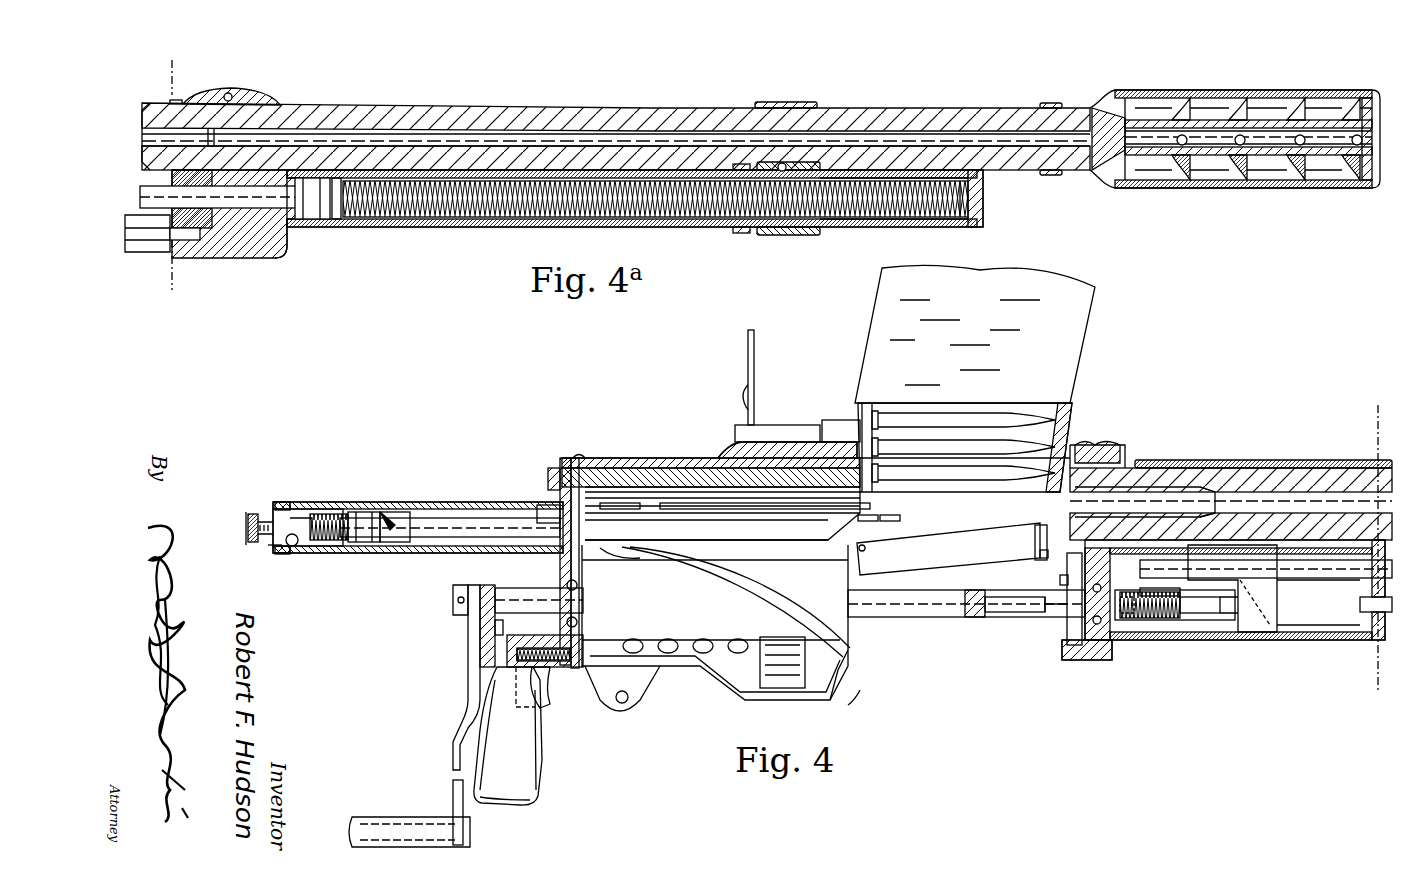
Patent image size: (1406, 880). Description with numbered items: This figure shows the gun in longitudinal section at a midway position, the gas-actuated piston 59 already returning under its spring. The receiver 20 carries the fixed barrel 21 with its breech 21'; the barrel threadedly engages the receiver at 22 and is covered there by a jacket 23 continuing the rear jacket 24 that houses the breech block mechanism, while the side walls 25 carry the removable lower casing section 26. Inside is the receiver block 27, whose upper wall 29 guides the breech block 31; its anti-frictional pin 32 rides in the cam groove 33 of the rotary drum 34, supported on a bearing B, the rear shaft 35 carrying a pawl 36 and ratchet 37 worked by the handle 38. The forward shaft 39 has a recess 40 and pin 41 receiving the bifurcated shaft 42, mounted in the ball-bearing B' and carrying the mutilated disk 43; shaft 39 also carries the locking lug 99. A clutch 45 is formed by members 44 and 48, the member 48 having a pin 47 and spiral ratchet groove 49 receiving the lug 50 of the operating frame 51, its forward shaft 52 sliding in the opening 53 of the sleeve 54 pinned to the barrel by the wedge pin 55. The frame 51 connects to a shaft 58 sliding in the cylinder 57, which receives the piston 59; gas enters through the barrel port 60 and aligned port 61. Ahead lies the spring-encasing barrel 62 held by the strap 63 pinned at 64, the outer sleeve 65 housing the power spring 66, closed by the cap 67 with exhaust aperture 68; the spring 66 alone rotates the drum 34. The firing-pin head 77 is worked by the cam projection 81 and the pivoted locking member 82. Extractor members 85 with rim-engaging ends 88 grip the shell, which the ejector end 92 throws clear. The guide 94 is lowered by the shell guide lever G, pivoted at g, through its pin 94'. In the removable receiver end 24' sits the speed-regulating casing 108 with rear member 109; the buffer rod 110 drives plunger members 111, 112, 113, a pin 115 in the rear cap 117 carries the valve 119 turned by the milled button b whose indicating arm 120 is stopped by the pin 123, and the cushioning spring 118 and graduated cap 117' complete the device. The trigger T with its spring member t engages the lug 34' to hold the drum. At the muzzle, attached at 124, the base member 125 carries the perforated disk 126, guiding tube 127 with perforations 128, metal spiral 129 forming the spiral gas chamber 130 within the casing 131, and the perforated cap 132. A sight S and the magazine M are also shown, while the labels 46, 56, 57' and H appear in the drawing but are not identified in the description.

In FIG. 4A, the receiver 20 is at (585, 107).
In FIG. 4, the receiver 20 is at (1100, 445).
In FIG. 4, the fixed barrel 21 is at (1231, 477).
In FIG. 4, the breech 21' is at (1175, 465).
In FIG. 4, the threaded engagement 22 is at (1090, 495).
In FIG. 4, the jacket 23 is at (1170, 460).
In FIG. 4, the rear jacket 24 is at (816, 456).
In FIG. 4, the removable end of receiver 24' is at (539, 487).
In FIG. 4, the side walls 25 is at (571, 568).
In FIG. 4, the lower section of casing 26 is at (845, 668).
In FIG. 4, the receiver block 27 is at (612, 478).
In FIG. 4, the upper wall 29 is at (806, 458).
In FIG. 4, the breech block 31 is at (670, 525).
In FIG. 4, the anti-frictional pin 32 is at (636, 558).
In FIG. 4, the cam groove 33 is at (742, 580).
In FIG. 4, the rotary cam drum 34 is at (715, 622).
In FIG. 4, the lug 34' is at (668, 626).
In FIG. 4, the shaft 35 is at (512, 597).
In FIG. 4, the pawl 36 is at (487, 585).
In FIG. 4, the ratchet 37 is at (498, 640).
In FIG. 4, the handle 38 is at (468, 625).
In FIG. 4, the forward shaft 39 is at (908, 617).
In FIG. 4, the recess 40 is at (985, 617).
In FIG. 4, the diametrically disposed pin 41 is at (1015, 614).
In FIG. 4, the shaft 42 is at (1046, 614).
In FIG. 4, the mutilated disk 43 is at (1068, 645).
In FIG. 4, the clutch member 44 is at (1130, 620).
In FIG. 4, the clutch 45 is at (1165, 618).
In FIG. 4, the gas piston 46 is at (1150, 592).
In FIG. 4, the pin 47 is at (1140, 620).
In FIG. 4, the clutch member 48 is at (1205, 618).
In FIG. 4, the spiral ratchet groove 49 is at (1232, 613).
In FIG. 4, the lug 50 is at (1262, 630).
In FIG. 4, the operating frame 51 is at (1212, 600).
In FIG. 4A, the forward shaft 52 is at (175, 252).
In FIG. 4, the forward shaft 52 is at (1365, 612).
In FIG. 4A, the spring-propelled locking pin 53 is at (200, 240).
In FIG. 4, the spring-propelled locking pin 53 is at (1155, 571).
In FIG. 4A, the sleeve 54 is at (238, 258).
In FIG. 4, the sleeve 54 is at (1067, 572).
In FIG. 4A, the wedge pin 55 is at (230, 96).
In FIG. 4A, the housing shoulder 56 is at (268, 258).
In FIG. 4A, the cylinder 57 is at (635, 230).
In FIG. 4A, the tube ring 57' is at (349, 216).
In FIG. 4A, the shaft 58 is at (250, 208).
In FIG. 4, the shaft 58 is at (1328, 598).
In FIG. 4A, the gas-actuated piston 59 is at (310, 219).
In FIG. 4A, the port 60 is at (208, 140).
In FIG. 4A, the port 61 is at (172, 180).
In FIG. 4A, the spring-encasing barrel 62 is at (466, 218).
In FIG. 4A, the sleeve or strap 63 is at (745, 233).
In FIG. 4A, the pin 64 is at (785, 235).
In FIG. 4A, the outer sleeve 65 is at (838, 228).
In FIG. 4A, the spring 66 is at (722, 212).
In FIG. 4A, the cap 67 is at (984, 212).
In FIG. 4A, the exhaust aperture 68 is at (975, 196).
In FIG. 4, the head of firing pin 77 is at (556, 500).
In FIG. 4, the cam projection 81 is at (785, 688).
In FIG. 4, the pivoted locking member 82 is at (578, 456).
In FIG. 4, the ejector members 85 is at (795, 509).
In FIG. 4, the rim-engaging ends 88 is at (866, 520).
In FIG. 4, the end of plunger 92 is at (890, 520).
In FIG. 4, the guide 94 is at (1029, 564).
In FIG. 4, the pin 94' is at (1023, 528).
In FIG. 4, the locking lug 99 is at (1064, 586).
In FIG. 4, the casing 108 is at (475, 504).
In FIG. 4, the rear member 109 is at (330, 509).
In FIG. 4, the buffer member 110 is at (435, 518).
In FIG. 4, the plunger member 111 is at (397, 514).
In FIG. 4, the plunger member 112 is at (363, 514).
In FIG. 4, the plunger member 113 is at (385, 515).
In FIG. 4, the pin 115 is at (293, 546).
In FIG. 4, the rear cap 117 is at (315, 566).
In FIG. 4, the cap 117' is at (297, 507).
In FIG. 4, the cushioning spring 118 is at (320, 514).
In FIG. 4, the valve 119 is at (290, 545).
In FIG. 4, the indicating arm 120 is at (262, 514).
In FIG. 4, the pin 123 is at (275, 548).
In FIG. 4A, the muzzle connection 124 is at (1052, 103).
In FIG. 4A, the base member 125 is at (1095, 188).
In FIG. 4A, the perforated gas-admitting disk 126 is at (1175, 170).
In FIG. 4A, the projectile guiding tube 127 is at (1155, 92).
In FIG. 4A, the perforations 128 is at (1188, 145).
In FIG. 4A, the metal spiral 129 is at (1218, 100).
In FIG. 4A, the spiral gas-directing chamber 130 is at (1278, 105).
In FIG. 4A, the casing 131 is at (1275, 188).
In FIG. 4A, the perforated cap 132 is at (1370, 185).
In FIG. 4, the bearing B is at (586, 598).
In FIG. 4, the ball-bearing B' is at (1223, 610).
In FIG. 4, the shell guide lever G is at (948, 549).
In FIG. 4, the pivot g is at (866, 549).
In FIG. 4, the pistol grip H is at (522, 768).
In FIG. 4, the magazine M is at (1060, 353).
In FIG. 4, the sight S is at (760, 405).
In FIG. 4, the trigger T is at (546, 678).
In FIG. 4, the spring actuated member t is at (568, 662).
In FIG. 4, the milled button b is at (247, 514).